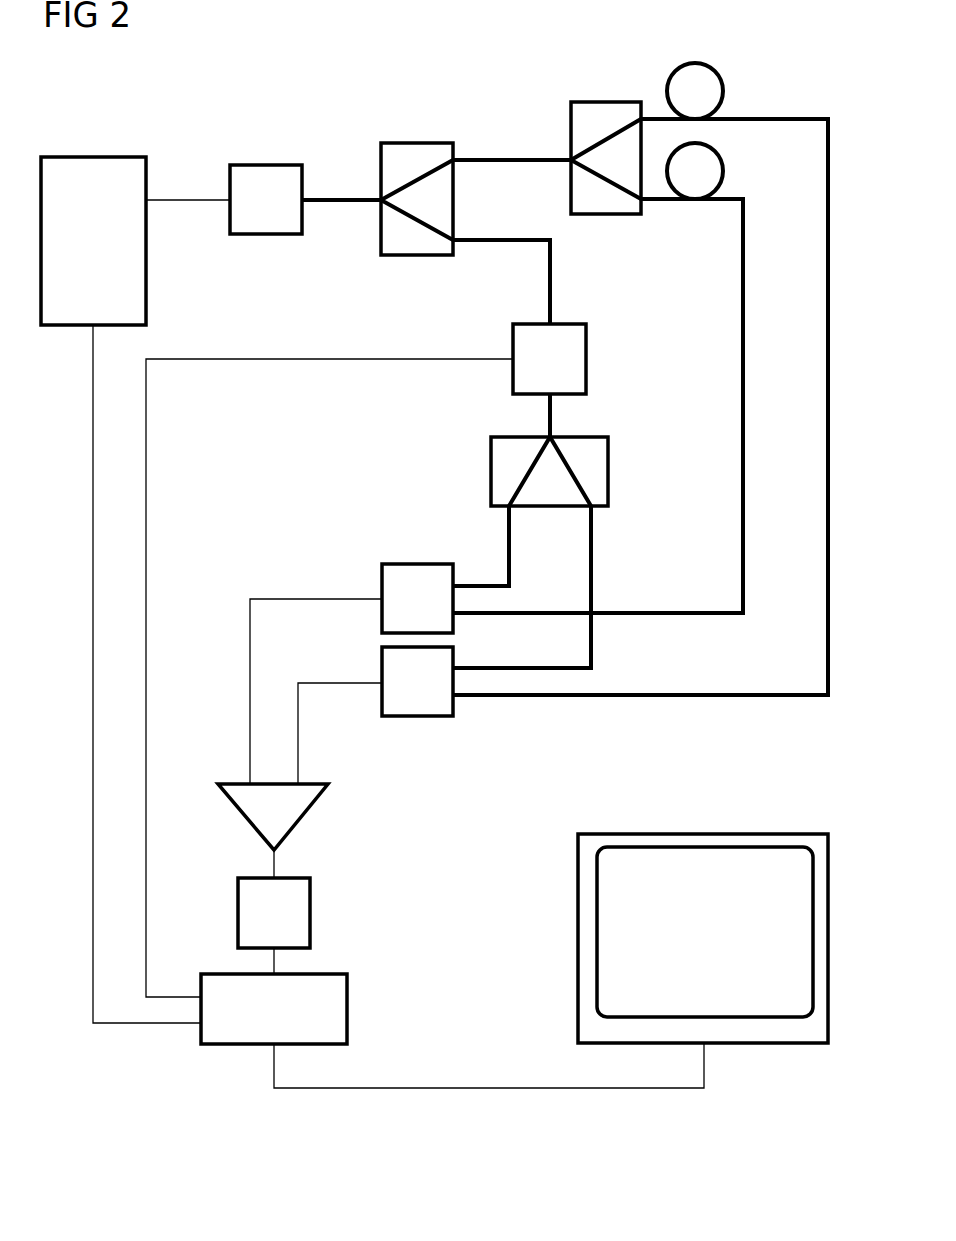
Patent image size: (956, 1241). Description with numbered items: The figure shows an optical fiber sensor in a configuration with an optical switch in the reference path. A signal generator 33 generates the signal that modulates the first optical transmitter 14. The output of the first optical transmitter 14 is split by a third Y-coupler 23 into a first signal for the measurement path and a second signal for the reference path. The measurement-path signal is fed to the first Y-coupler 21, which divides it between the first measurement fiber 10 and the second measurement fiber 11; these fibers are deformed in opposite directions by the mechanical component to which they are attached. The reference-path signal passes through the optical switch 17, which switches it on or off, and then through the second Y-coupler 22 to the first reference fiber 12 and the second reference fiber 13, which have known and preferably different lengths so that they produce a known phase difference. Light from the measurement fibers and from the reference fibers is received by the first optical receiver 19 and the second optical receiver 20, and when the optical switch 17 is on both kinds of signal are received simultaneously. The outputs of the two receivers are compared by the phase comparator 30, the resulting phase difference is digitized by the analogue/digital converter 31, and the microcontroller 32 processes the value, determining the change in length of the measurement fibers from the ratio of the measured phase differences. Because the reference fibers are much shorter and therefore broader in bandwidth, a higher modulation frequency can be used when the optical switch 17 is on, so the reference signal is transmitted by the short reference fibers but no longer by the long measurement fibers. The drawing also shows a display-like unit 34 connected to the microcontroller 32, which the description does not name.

The first measurement fiber 10 is at (723, 89).
The second measurement fiber 11 is at (723, 170).
The first reference fiber 12 is at (591, 558).
The second reference fiber 13 is at (509, 558).
The first optical transmitter 14 is at (265, 165).
The optical switch 17 is at (586, 358).
The first optical receiver 19 is at (418, 716).
The second optical receiver 20 is at (416, 564).
The first Y-coupler 21 is at (604, 102).
The second Y-coupler 22 is at (608, 470).
The third Y-coupler 23 is at (415, 143).
The phase comparator 30 is at (304, 822).
The analogue/digital converter 31 is at (310, 915).
The microcontroller 32 is at (347, 1010).
The signal generator 33 is at (92, 157).
The display 34 is at (702, 834).